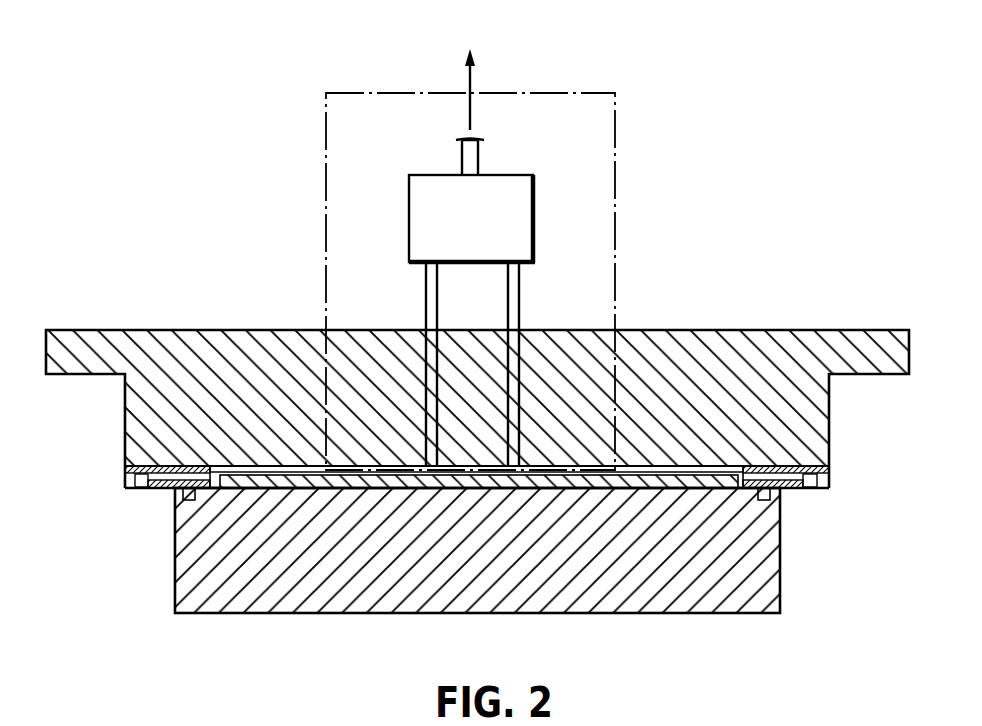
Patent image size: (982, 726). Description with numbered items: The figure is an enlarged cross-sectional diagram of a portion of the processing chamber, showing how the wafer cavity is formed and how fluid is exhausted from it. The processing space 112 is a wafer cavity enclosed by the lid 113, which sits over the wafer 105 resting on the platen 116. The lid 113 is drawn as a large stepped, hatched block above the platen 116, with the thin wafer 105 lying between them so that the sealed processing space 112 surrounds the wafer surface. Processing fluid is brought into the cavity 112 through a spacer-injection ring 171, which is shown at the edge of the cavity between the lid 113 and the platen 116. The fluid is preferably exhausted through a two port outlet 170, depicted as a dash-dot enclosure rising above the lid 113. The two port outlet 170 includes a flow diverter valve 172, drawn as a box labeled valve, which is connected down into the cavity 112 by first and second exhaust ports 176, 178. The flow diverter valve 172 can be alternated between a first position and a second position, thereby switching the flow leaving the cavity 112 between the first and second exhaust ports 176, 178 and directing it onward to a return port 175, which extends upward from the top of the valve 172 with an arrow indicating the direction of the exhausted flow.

The wafer 105 is at (273, 466).
The processing space 112 is at (235, 465).
The lid 113 is at (285, 342).
The platen 116 is at (323, 613).
The two port outlet 170 is at (615, 192).
The spacer-injection ring 171 is at (830, 480).
The flow diverter valve 172 is at (533, 238).
The return port 175 is at (479, 162).
The first exhaust port 176 is at (519, 463).
The second exhaust port 178 is at (427, 463).